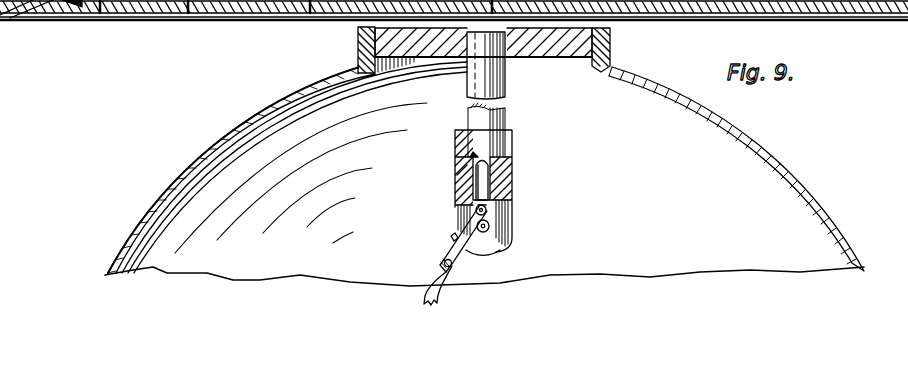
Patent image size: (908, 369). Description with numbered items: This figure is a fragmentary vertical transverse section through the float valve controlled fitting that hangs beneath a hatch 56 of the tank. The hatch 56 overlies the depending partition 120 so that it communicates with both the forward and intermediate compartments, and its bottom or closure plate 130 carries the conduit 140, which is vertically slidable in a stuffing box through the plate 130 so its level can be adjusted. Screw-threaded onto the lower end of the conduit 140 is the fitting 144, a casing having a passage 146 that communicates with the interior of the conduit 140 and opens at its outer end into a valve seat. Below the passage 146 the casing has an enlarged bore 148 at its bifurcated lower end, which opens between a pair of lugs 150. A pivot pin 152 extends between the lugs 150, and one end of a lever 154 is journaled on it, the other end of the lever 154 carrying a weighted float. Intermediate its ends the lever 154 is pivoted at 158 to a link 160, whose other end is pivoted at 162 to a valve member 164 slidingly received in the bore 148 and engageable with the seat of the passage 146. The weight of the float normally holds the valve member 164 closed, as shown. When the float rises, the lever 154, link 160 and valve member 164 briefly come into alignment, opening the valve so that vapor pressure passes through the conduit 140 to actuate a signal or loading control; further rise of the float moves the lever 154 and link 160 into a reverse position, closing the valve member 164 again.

The hatch 56 is at (608, 40).
The partition 120 is at (765, 177).
The bottom or closure plate 130 is at (560, 43).
The conduit 140 is at (503, 82).
The float valve controlled fitting 144 is at (505, 172).
The passage 146 is at (470, 151).
The enlarged bore 148 is at (465, 184).
The lugs 150 is at (497, 232).
The pivot pin 152 is at (484, 250).
The lever 154 is at (430, 274).
The pivot 158 is at (447, 259).
The link 160 is at (451, 235).
The pivot 162 is at (486, 211).
The valve member 164 is at (485, 183).